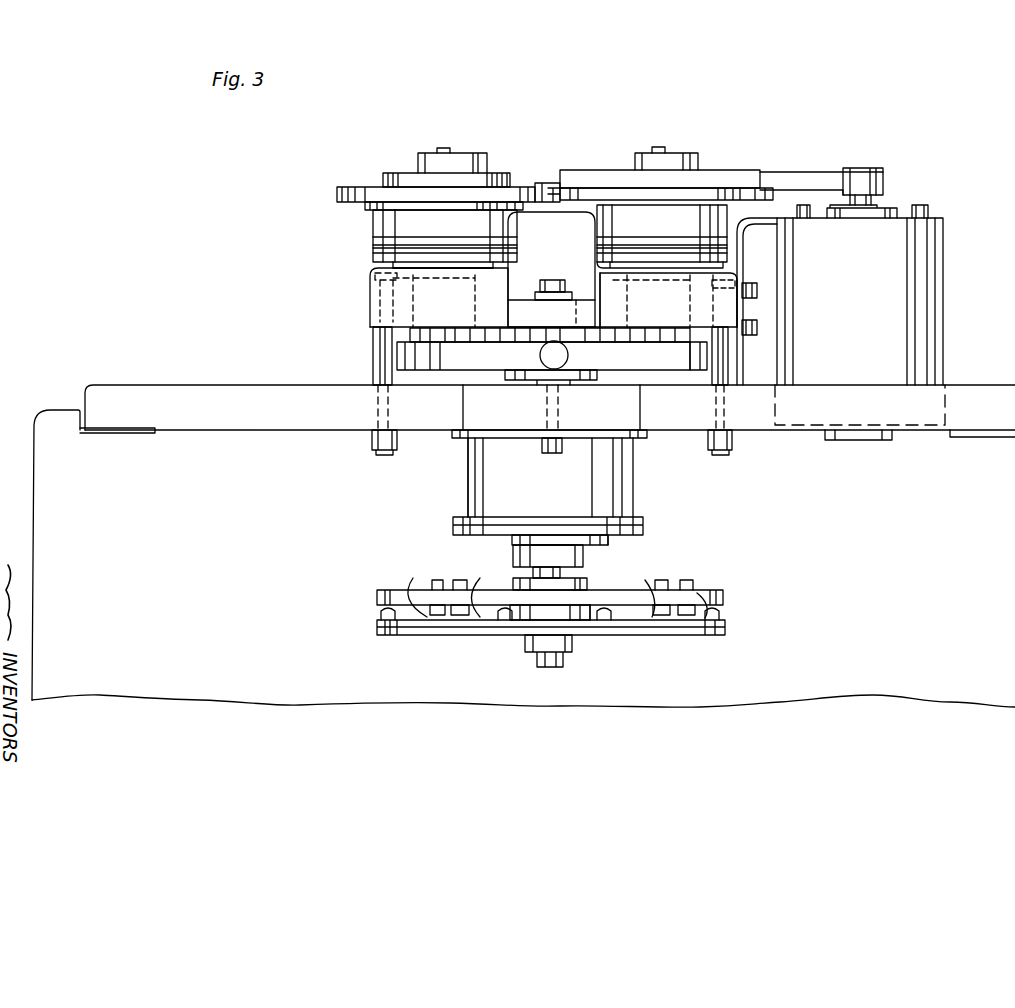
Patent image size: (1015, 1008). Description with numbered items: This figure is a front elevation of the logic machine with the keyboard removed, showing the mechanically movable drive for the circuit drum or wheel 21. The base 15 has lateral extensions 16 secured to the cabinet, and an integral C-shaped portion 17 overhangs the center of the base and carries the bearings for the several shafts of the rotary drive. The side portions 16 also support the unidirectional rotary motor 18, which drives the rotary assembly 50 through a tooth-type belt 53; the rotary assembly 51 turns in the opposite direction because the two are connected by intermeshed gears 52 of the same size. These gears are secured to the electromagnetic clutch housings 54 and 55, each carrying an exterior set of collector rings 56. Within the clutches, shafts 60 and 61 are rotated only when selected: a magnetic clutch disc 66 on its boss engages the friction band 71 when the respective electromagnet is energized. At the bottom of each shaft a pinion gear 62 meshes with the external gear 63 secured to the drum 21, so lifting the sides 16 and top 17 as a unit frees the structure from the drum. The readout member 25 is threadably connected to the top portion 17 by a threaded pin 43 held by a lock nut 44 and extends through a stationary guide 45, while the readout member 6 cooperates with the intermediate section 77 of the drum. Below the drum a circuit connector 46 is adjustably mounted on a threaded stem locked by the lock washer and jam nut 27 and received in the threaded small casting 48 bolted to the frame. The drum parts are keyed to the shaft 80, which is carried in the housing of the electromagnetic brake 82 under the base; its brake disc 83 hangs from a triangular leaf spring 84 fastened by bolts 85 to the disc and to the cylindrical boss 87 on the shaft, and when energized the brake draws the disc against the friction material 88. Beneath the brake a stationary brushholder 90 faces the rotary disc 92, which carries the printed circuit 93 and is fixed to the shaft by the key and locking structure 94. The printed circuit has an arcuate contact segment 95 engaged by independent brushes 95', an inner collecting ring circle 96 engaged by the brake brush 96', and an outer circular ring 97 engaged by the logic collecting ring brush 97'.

The readout member 6 is at (540, 356).
The base 15 is at (745, 430).
The lateral extensions 16 is at (198, 425).
The C-shaped portion 17 is at (395, 299).
The unidirectional rotary motor 18 is at (918, 285).
The circuit drum or wheel 21 is at (665, 365).
The readout member 25 is at (576, 300).
The lock washer and jam nut 27 is at (538, 447).
The threaded pin 43 is at (548, 280).
The lock nut 44 is at (540, 297).
The stationary guide 45 is at (595, 327).
The circuit connector 46 is at (546, 392).
The threaded small casting 48 is at (570, 412).
The rotary assembly 50 is at (752, 168).
The rotary assembly 51 is at (523, 166).
The intermeshed gears 52 is at (543, 195).
The tooth-type belt 53 is at (795, 172).
The electromagnetic clutch housing 54 is at (672, 229).
The electromagnetic clutch housing 55 is at (457, 229).
The collector rings 56 is at (722, 250).
The shaft 60 is at (650, 282).
The shaft 61 is at (443, 268).
The pinion gear 62 is at (443, 327).
The external gear 63 is at (545, 337).
The clutch disc 66 is at (405, 185).
The friction band 71 is at (385, 182).
The intermediate section 77 is at (400, 352).
The shaft 80 is at (560, 573).
The electromagnetic brake 82 is at (613, 495).
The brake disc 83 is at (455, 540).
The triangular leaf spring 84 is at (555, 545).
The bolts 85 is at (625, 545).
The cylindrical boss 87 is at (530, 550).
The friction material 88 is at (465, 517).
The stationary brushholder 90 is at (375, 598).
The rotary disc 92 is at (690, 635).
The printed circuit 93 is at (650, 627).
The key and locking structure 94 is at (535, 660).
The arcuate contact segment 95 is at (520, 590).
The independent brushes 95' is at (552, 580).
The inner collecting ring circle 96 is at (531, 593).
The brake brush 96' is at (474, 580).
The outer circular ring 97 is at (723, 591).
The logic collecting ring brush 97' is at (702, 582).